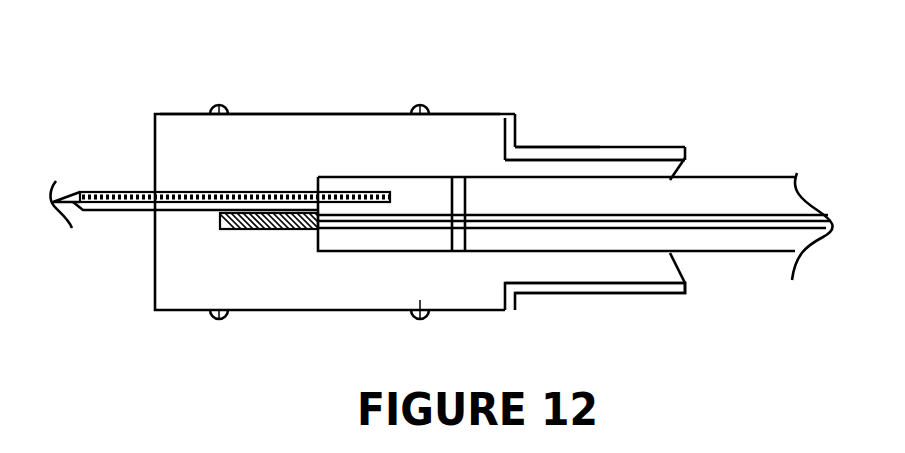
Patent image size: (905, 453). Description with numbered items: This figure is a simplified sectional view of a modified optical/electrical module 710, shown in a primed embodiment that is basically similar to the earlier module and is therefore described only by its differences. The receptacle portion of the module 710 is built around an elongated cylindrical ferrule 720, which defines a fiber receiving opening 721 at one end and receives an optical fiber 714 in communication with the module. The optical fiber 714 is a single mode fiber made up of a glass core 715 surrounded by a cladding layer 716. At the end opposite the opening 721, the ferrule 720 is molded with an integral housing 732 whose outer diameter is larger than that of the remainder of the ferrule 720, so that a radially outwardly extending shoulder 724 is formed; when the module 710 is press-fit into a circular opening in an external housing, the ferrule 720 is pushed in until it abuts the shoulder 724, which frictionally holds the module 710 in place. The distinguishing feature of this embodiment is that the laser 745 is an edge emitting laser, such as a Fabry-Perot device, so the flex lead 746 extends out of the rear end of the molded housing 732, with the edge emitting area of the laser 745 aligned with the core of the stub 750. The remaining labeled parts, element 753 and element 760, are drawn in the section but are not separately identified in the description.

The optical/electrical module 710 is at (643, 75).
The ferrule 720 is at (482, 134).
The housing 732 is at (240, 130).
The shoulder 724 is at (490, 150).
The fiber receiving opening 721 is at (700, 275).
The cladding layer 716 is at (692, 197).
The ferrule holder 760 is at (597, 153).
The optical fiber 714 is at (744, 146).
The cable 715 is at (748, 222).
The stub 750 is at (400, 250).
The optical fiber 753 is at (241, 192).
The flex lead 746 is at (82, 203).
The laser 745 is at (273, 227).